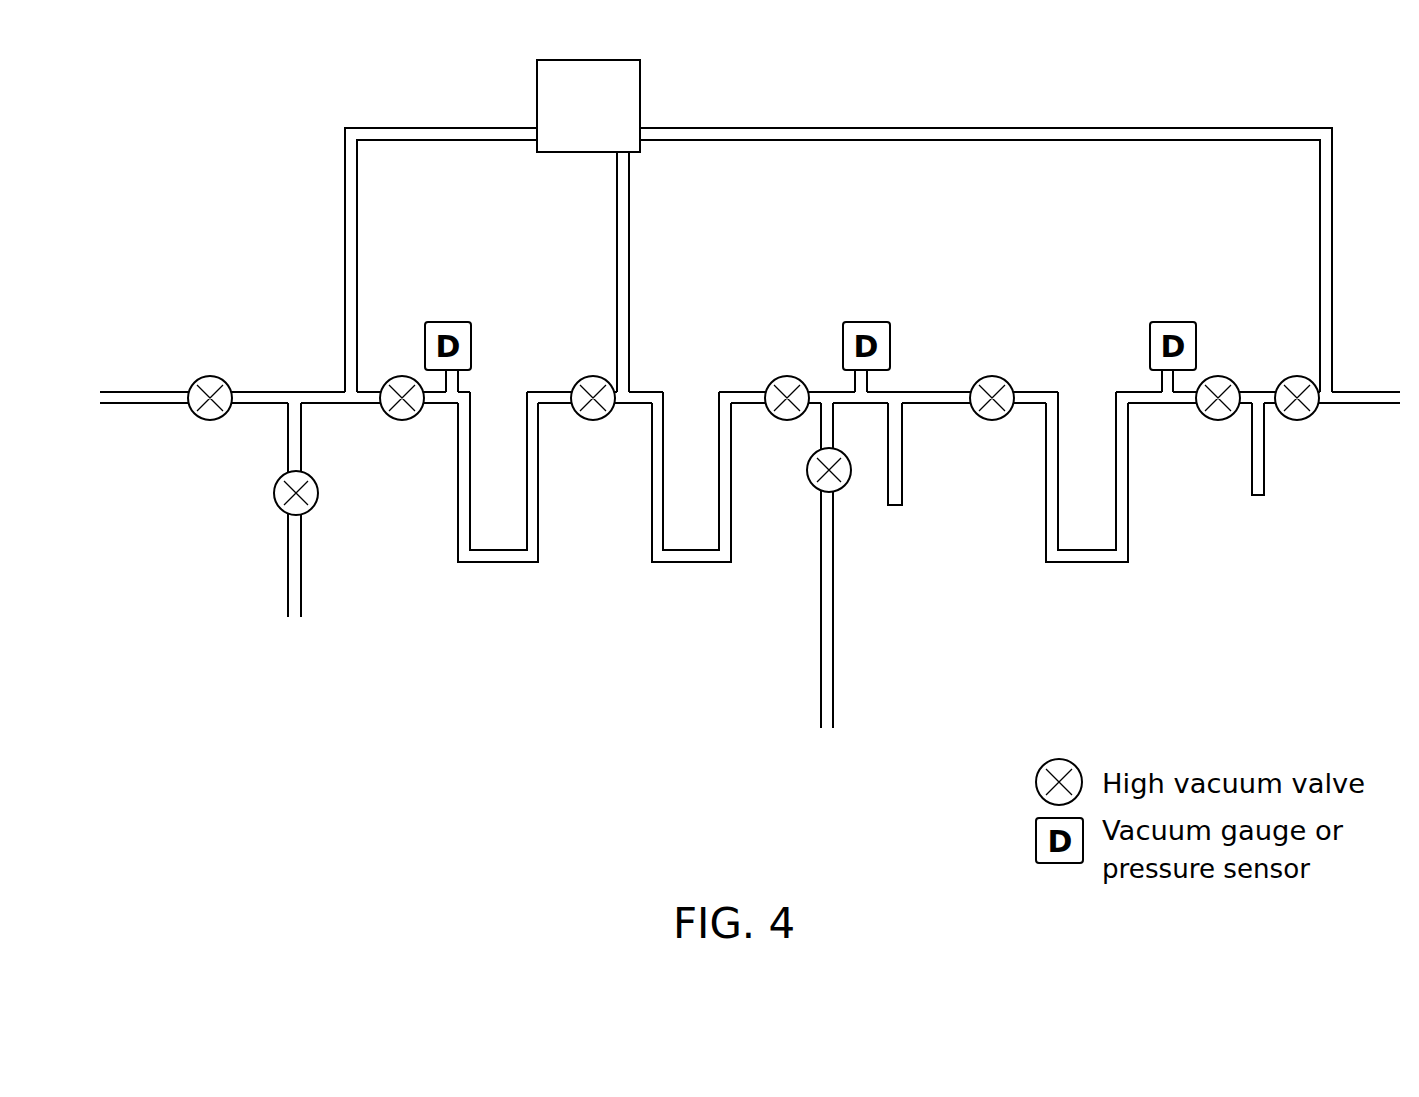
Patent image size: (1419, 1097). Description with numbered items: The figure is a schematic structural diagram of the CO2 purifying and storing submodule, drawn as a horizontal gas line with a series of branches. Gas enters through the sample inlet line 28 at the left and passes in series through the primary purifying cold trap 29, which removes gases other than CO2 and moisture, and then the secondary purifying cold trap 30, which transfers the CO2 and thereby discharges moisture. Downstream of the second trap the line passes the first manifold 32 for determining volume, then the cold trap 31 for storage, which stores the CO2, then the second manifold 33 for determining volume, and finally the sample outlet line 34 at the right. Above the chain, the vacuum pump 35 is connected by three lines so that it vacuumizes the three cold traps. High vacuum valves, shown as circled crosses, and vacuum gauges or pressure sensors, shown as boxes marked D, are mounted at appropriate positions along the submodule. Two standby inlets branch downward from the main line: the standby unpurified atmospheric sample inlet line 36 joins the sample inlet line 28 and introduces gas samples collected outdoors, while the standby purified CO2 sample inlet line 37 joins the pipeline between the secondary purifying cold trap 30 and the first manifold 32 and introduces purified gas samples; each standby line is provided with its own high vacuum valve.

The sample inlet line 28 is at (159, 385).
The primary purifying cold trap 29 is at (500, 570).
The secondary purifying cold trap 30 is at (697, 570).
The cold trap for storage 31 is at (1084, 570).
The first manifold for determining volume 32 is at (895, 512).
The second manifold for determining volume 33 is at (1258, 502).
The sample outlet line 34 is at (1372, 385).
The vacuum pump 35 is at (526, 85).
The standby unpurified atmospheric sample inlet line 36 is at (273, 562).
The standby purified CO2 sample inlet line 37 is at (833, 694).